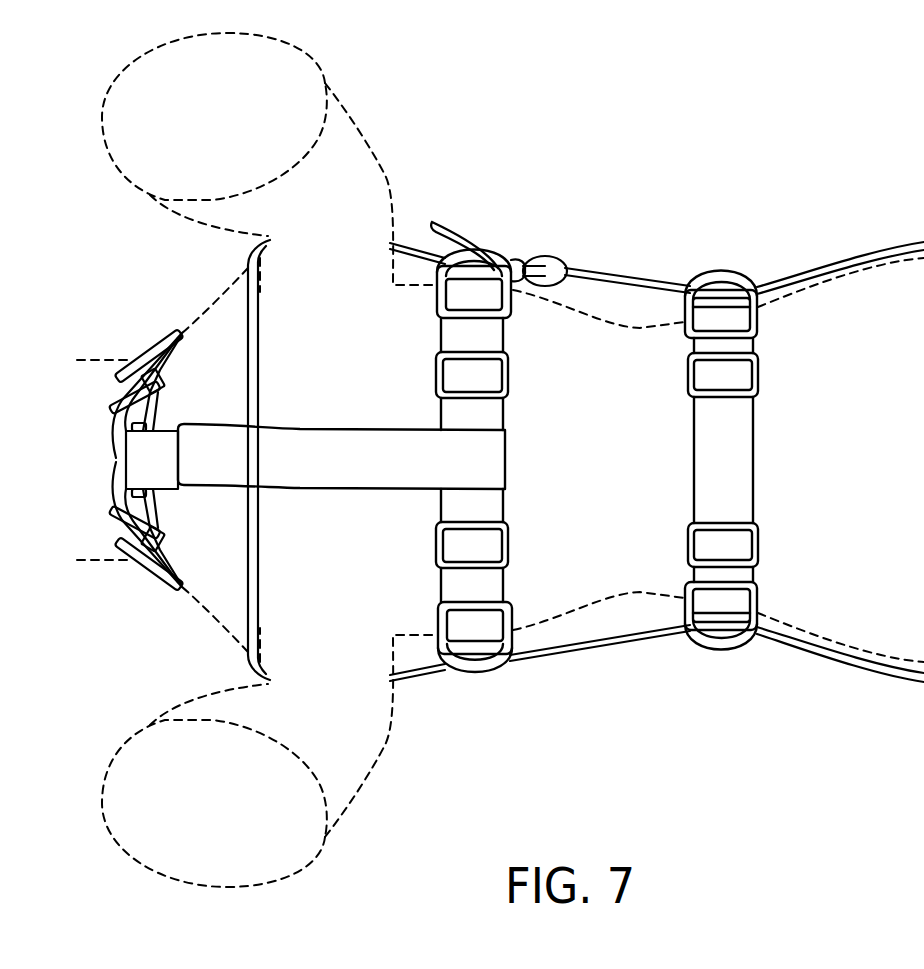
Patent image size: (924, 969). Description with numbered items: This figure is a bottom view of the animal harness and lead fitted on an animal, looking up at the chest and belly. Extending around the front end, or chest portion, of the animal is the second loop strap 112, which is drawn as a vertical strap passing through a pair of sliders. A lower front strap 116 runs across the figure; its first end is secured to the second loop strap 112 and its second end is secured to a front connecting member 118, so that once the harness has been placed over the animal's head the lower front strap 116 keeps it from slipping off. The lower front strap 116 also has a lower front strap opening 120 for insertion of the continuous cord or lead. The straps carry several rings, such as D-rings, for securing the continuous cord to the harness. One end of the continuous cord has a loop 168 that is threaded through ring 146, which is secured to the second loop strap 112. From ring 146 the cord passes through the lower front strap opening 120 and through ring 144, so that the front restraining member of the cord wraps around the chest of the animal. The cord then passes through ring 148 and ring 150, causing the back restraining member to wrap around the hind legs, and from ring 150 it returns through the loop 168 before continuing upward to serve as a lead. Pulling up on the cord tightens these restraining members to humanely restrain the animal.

The second loop strap 112 is at (482, 506).
The lower front strap 116 is at (355, 465).
The front connecting member 118 is at (148, 502).
The lower front strap opening 120 is at (226, 492).
The ring 144 is at (488, 242).
The ring 146 is at (487, 677).
The ring 148 is at (718, 270).
The ring 150 is at (708, 650).
The loop 168 is at (552, 257).